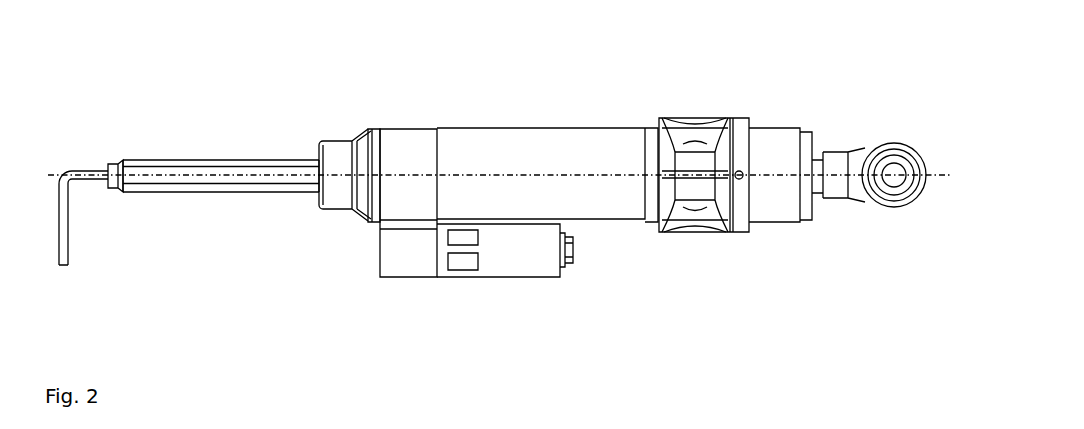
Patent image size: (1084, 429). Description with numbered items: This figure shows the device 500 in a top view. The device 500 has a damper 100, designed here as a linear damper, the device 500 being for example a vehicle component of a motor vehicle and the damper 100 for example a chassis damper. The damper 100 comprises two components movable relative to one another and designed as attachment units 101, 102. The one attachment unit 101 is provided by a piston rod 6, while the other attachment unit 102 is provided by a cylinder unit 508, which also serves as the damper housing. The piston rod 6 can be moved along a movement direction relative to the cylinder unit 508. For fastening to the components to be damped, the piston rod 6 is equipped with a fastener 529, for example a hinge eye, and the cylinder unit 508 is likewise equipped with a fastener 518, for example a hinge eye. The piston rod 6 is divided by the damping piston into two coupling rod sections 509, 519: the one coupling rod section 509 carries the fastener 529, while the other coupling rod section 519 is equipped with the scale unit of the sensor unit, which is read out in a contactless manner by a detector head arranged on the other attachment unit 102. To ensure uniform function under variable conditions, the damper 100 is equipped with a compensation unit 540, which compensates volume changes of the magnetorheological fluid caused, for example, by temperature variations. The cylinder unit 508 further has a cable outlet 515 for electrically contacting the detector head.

The device 500 is at (121, 69).
The damper 100 is at (777, 111).
The attachment unit 101 is at (227, 156).
The piston rod 6 is at (258, 160).
The attachment unit 102 is at (517, 126).
The cylinder unit 508 is at (573, 128).
The fastener 518 is at (683, 140).
The coupling rod section 509 is at (813, 208).
The fastener 529 is at (892, 210).
The cable outlet 515 is at (69, 243).
The coupling rod section 519 is at (253, 183).
The compensation unit 540 is at (513, 250).